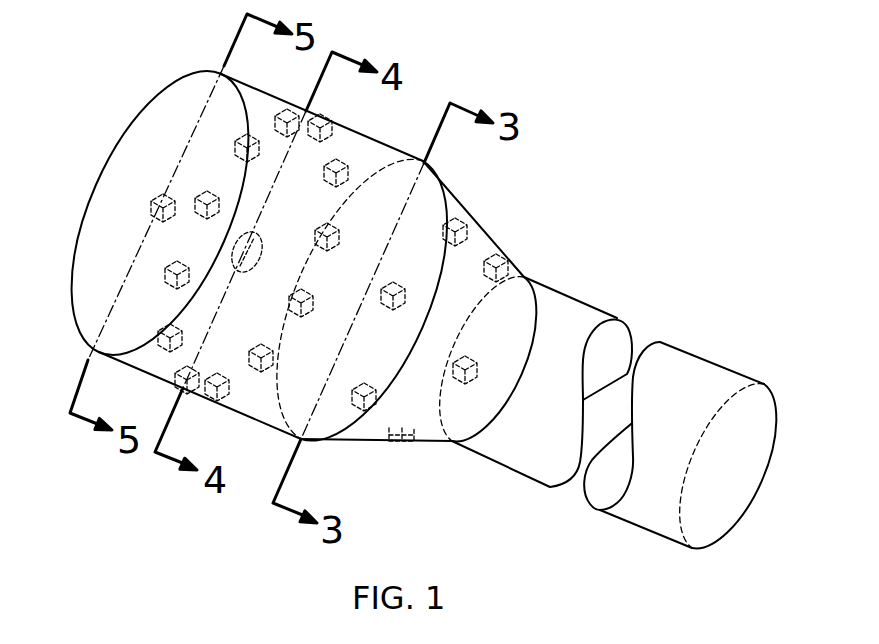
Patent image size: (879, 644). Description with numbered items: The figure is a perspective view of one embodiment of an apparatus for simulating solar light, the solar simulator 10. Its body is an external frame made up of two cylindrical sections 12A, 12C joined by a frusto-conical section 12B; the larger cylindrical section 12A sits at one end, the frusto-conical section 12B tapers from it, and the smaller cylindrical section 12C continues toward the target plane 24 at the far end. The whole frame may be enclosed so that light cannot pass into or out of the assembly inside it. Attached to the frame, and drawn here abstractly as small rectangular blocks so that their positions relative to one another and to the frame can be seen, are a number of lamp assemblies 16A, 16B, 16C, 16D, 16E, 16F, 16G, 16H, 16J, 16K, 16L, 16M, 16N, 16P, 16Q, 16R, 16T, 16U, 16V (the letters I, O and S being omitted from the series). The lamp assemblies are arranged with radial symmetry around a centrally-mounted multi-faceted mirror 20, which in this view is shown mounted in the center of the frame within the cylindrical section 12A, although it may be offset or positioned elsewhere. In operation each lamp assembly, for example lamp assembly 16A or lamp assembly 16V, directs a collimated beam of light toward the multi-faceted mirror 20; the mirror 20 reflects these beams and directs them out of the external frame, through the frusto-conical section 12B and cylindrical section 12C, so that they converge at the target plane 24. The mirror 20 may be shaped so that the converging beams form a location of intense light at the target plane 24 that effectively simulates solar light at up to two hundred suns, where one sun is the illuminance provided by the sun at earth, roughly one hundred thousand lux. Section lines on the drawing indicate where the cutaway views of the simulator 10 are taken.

The solar simulator 10 is at (566, 166).
The cylindrical section 12A is at (270, 427).
The frusto-conical section 12B is at (434, 443).
The cylindrical section 12C is at (632, 523).
The target plane 24 is at (765, 482).
The multi-faceted mirror 20 is at (262, 245).
The lamp assembly 16A is at (151, 203).
The lamp assembly 16B is at (467, 225).
The lamp assembly 16C is at (508, 261).
The lamp assembly 16D is at (477, 377).
The lamp assembly 16E is at (402, 444).
The lamp assembly 16F is at (364, 411).
The lamp assembly 16G is at (393, 310).
The lamp assembly 16H is at (332, 121).
The lamp assembly 16J is at (348, 180).
The lamp assembly 16K is at (339, 230).
The lamp assembly 16L is at (313, 296).
The lamp assembly 16M is at (273, 351).
The lamp assembly 16N is at (217, 401).
The lamp assembly 16P is at (175, 383).
The lamp assembly 16Q is at (170, 324).
The lamp assembly 16R is at (165, 268).
The lamp assembly 16T is at (207, 191).
The lamp assembly 16U is at (235, 143).
The lamp assembly 16V is at (287, 109).